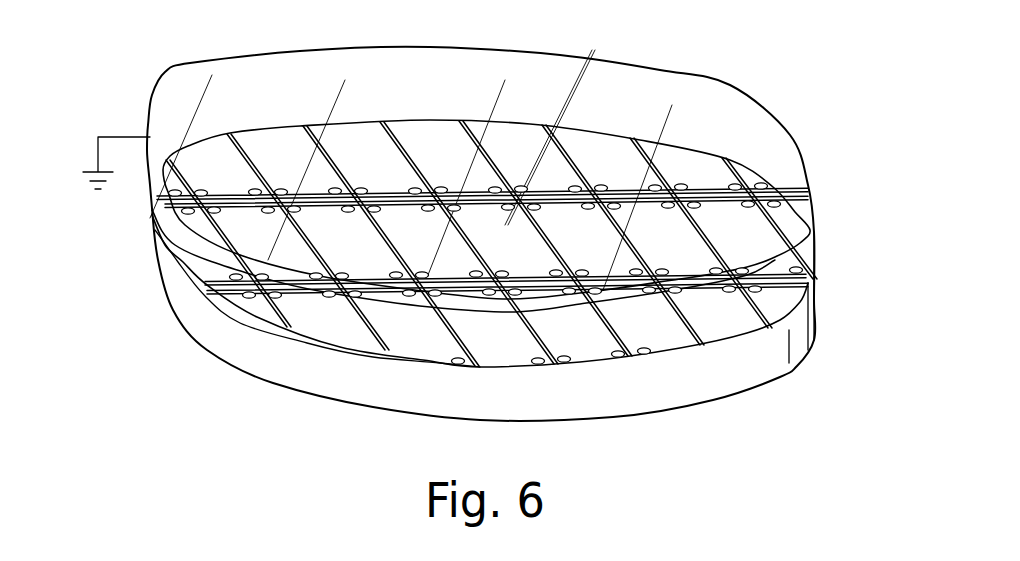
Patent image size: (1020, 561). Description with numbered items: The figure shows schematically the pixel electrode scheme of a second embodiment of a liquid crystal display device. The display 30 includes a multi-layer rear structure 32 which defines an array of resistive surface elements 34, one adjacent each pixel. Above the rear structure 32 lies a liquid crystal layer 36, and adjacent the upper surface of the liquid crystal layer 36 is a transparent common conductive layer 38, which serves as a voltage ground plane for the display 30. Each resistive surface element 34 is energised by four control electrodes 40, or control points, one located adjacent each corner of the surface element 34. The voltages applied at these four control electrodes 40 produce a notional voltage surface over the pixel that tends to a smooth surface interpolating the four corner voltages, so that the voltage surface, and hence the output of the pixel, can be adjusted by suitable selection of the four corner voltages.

The display 30 is at (222, 374).
The multi-layer rear structure 32 is at (333, 382).
The resistive surface element 34 is at (648, 345).
The liquid crystal layer 36 is at (828, 280).
The transparent common conductive layer 38 is at (722, 85).
The control electrodes 40 is at (601, 185).